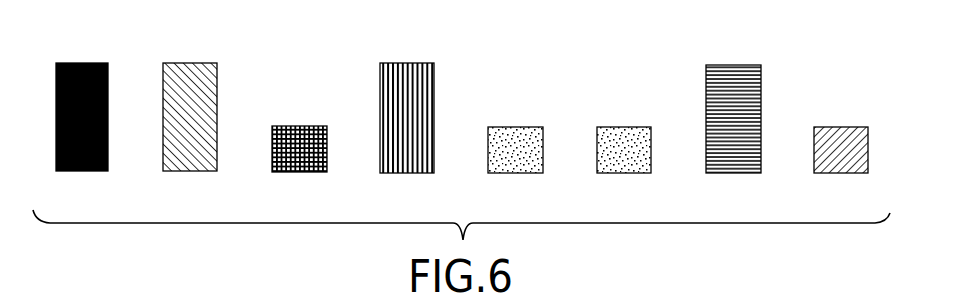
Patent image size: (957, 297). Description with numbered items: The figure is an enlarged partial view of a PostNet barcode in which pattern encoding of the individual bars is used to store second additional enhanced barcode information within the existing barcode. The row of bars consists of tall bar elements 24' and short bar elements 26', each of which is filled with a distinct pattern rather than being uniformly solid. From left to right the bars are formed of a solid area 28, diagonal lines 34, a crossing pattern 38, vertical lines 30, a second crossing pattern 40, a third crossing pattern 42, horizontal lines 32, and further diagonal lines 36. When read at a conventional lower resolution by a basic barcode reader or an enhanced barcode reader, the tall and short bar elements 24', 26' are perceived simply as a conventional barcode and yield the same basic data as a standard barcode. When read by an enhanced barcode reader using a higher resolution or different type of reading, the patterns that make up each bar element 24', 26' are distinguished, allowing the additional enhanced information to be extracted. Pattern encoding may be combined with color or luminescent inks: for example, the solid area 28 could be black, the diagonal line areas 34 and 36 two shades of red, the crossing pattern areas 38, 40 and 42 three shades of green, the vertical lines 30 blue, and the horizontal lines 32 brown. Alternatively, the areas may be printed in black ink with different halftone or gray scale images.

The tall bar element 24' is at (434, 42).
The short bar element 26' is at (431, 110).
The solid area 28 is at (70, 171).
The vertical lines 30 is at (400, 173).
The horizontal lines 32 is at (725, 173).
The diagonal lines 34 is at (180, 171).
The diagonal lines 36 is at (845, 173).
The crossing pattern 38 is at (293, 172).
The crossing pattern 40 is at (528, 173).
The crossing pattern 42 is at (625, 173).